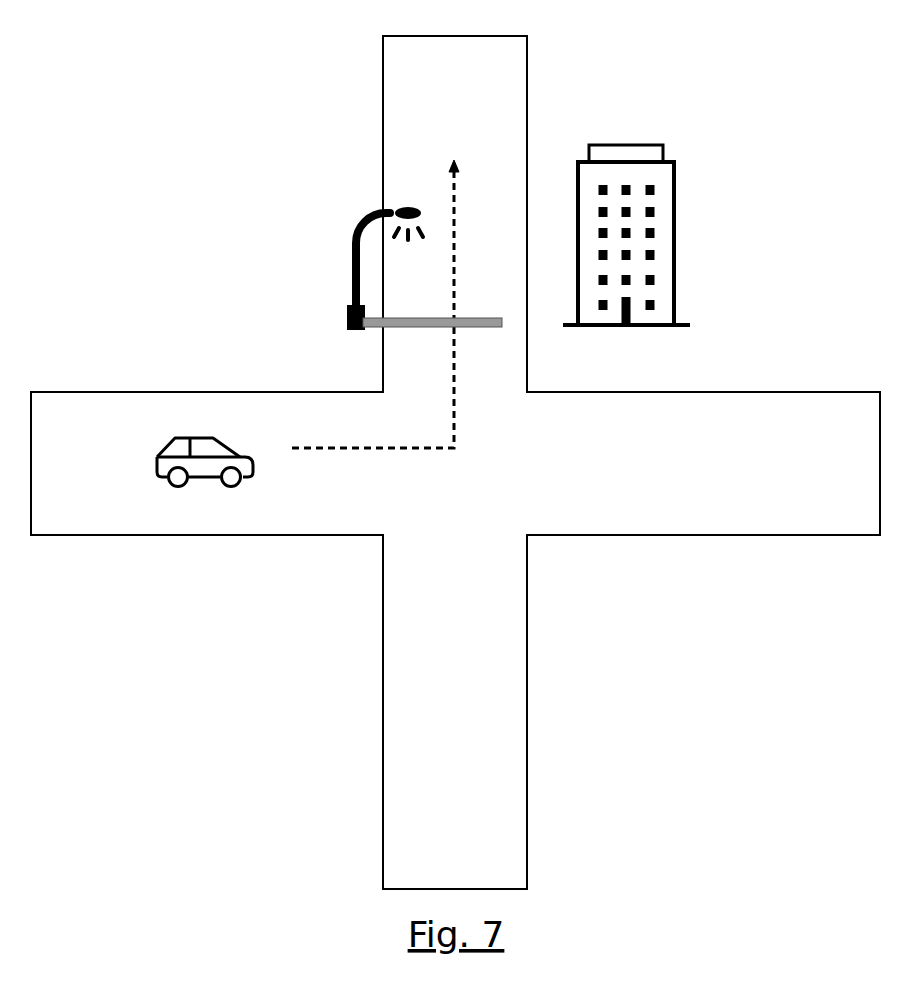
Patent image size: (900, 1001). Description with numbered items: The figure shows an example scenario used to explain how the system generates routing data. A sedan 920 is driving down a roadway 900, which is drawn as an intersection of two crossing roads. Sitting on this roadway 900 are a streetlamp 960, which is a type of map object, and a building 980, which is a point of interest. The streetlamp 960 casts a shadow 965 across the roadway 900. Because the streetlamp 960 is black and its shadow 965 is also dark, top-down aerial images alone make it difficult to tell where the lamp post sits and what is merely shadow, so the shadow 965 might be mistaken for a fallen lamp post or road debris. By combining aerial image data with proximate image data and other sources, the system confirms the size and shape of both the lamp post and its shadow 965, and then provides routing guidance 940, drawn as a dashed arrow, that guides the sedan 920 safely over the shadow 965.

The roadway 900 is at (408, 665).
The sedan 920 is at (142, 450).
The routing guidance 940 is at (477, 208).
The streetlamp 960 is at (323, 280).
The shadow 965 is at (490, 337).
The building 980 is at (712, 243).